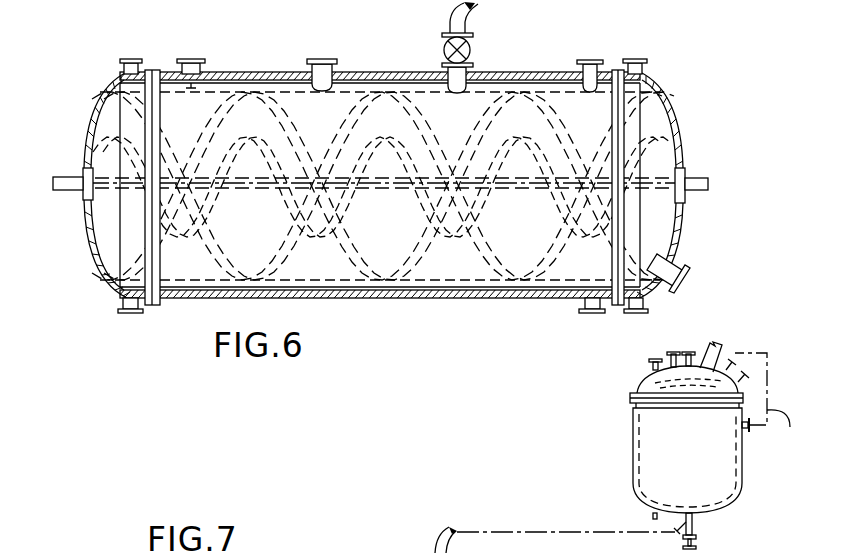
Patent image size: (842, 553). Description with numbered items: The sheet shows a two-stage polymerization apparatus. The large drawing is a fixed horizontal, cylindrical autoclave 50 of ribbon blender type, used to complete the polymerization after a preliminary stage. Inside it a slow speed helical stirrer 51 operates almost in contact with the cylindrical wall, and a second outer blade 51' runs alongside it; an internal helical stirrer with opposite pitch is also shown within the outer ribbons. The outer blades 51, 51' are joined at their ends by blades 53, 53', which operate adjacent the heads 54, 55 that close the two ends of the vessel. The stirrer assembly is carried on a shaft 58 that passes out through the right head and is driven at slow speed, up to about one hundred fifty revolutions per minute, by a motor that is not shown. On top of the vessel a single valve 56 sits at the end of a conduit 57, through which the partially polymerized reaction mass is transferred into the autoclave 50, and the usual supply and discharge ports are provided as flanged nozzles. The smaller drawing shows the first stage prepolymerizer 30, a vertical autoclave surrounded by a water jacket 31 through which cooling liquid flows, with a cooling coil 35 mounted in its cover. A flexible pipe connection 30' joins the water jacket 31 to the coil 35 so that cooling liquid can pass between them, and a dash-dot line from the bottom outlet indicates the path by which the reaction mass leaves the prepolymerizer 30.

In FIG. 6, the fixed autoclave 50 is at (328, 268).
In FIG. 6, the helical stirrer 51 is at (380, 311).
In FIG. 6, the outer blade 51' is at (383, 162).
In FIG. 6, the end blade 53 is at (86, 233).
In FIG. 6, the end blade 53' is at (692, 250).
In FIG. 6, the head 54 is at (108, 118).
In FIG. 6, the head 55 is at (655, 128).
In FIG. 6, the valve 56 is at (444, 50).
In FIG. 6, the conduit 57 is at (468, 16).
In FIG. 6, the shaft 58 is at (700, 183).
In FIG. 7, the prepolymerizer 30 is at (624, 471).
In FIG. 7, the flexible pipe connection 30' is at (769, 404).
In FIG. 7, the water jacket 31 is at (645, 447).
In FIG. 7, the cooling coil 35 is at (640, 377).